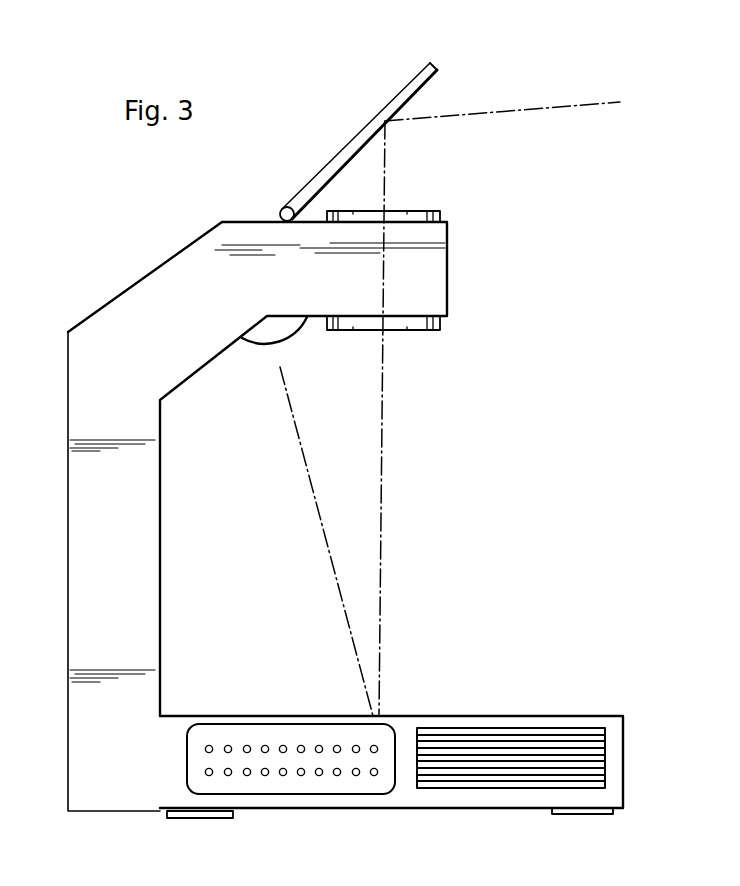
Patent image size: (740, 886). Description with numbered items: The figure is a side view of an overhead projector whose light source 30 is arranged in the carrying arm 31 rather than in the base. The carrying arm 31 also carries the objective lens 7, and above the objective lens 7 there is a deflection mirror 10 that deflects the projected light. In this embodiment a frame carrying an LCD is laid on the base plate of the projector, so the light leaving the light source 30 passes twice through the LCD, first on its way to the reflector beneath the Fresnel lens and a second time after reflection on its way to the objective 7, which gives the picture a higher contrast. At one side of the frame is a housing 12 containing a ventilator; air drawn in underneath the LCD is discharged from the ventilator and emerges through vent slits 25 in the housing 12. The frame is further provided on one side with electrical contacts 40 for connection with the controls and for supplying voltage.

The objective lens 7 is at (398, 331).
The deflection mirror 10 is at (348, 147).
The housing 12 is at (457, 800).
The vent slits 25 is at (513, 762).
The light source 30 is at (284, 331).
The carrying arm 31 is at (195, 358).
The electrical contacts 40 is at (283, 753).